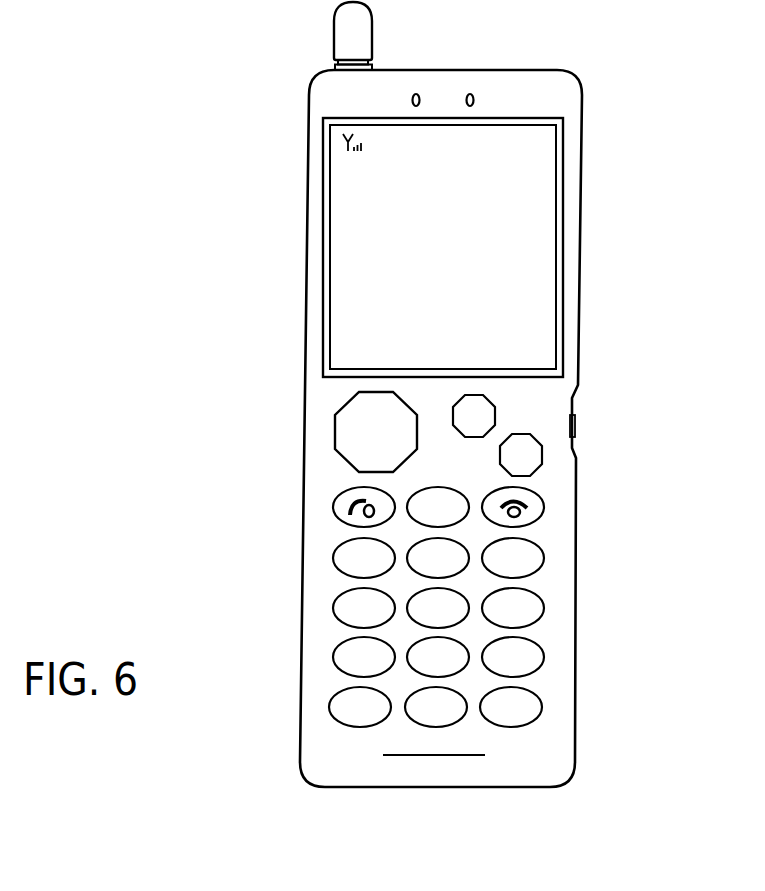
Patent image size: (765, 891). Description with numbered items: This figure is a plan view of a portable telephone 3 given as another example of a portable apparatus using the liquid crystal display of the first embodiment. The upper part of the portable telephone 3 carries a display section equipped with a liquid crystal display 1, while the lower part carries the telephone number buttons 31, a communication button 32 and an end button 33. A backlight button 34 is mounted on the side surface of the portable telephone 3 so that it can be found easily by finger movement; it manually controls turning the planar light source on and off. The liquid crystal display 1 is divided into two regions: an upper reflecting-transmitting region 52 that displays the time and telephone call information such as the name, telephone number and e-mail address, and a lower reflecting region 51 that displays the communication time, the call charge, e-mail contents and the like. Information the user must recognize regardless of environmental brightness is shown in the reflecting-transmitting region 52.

The portable telephone 3 is at (534, 57).
The liquid crystal display 1 is at (426, 247).
The reflecting-transmitting region 52 is at (278, 120).
The reflecting region 51 is at (278, 262).
The backlight button 34 is at (576, 421).
The end button 33 is at (545, 505).
The communication button 32 is at (333, 507).
The telephone number buttons 31 is at (338, 556).